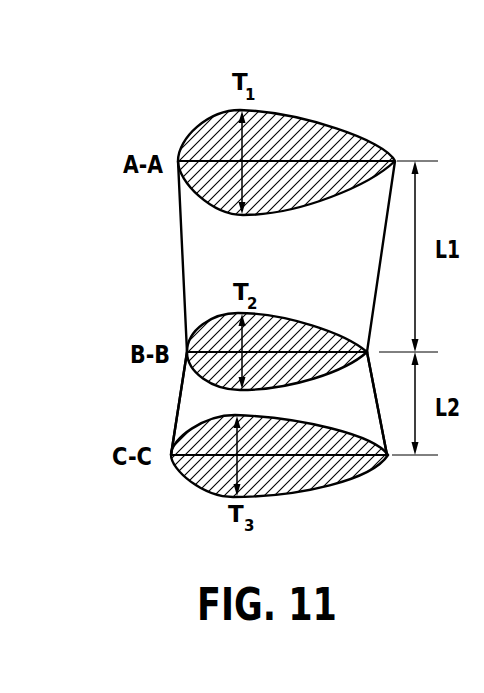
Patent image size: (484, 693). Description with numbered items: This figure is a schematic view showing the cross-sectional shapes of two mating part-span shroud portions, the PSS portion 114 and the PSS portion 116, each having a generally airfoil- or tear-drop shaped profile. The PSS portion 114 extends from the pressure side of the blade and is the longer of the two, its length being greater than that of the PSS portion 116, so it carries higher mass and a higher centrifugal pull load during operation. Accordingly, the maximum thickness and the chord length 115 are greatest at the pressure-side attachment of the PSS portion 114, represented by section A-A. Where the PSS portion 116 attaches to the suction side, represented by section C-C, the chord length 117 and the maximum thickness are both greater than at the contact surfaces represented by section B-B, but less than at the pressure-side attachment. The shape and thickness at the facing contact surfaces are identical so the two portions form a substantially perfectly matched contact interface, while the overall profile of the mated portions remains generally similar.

The PSS portion 114 is at (172, 253).
The chord length 115 is at (293, 160).
The PSS portion 116 is at (163, 411).
The chord length 117 is at (295, 457).